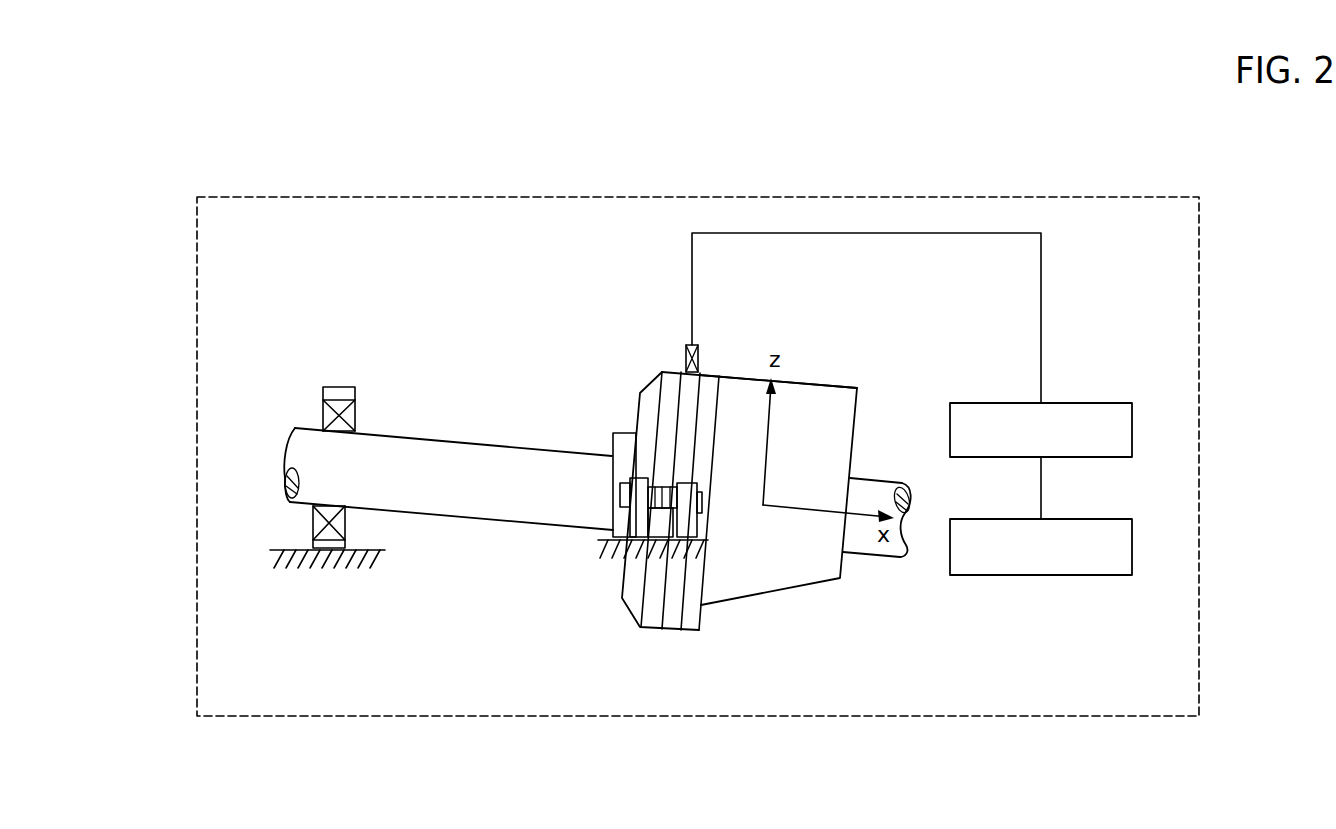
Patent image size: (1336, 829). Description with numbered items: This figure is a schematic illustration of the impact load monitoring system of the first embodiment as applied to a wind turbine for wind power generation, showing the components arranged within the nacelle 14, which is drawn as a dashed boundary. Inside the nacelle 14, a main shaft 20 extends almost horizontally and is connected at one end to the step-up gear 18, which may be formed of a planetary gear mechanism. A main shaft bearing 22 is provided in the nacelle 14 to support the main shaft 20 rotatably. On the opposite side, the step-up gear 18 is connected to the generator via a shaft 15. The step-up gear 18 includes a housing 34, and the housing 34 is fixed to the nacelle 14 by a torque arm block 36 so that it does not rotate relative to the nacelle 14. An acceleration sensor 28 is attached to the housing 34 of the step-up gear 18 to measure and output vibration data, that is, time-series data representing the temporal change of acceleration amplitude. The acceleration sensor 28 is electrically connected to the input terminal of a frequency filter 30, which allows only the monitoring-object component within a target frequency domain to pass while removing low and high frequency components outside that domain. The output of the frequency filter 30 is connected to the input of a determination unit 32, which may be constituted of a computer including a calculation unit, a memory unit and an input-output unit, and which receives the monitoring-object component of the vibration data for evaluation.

The nacelle 14 is at (946, 196).
The shaft 15 is at (888, 480).
The step-up gear 18 is at (862, 380).
The main shaft 20 is at (490, 443).
The main shaft bearing 22 is at (357, 422).
The acceleration sensor 28 is at (700, 349).
The frequency filter 30 is at (1097, 403).
The determination unit 32 is at (1097, 519).
The housing 34 is at (822, 380).
The torque arm block 36 is at (686, 483).